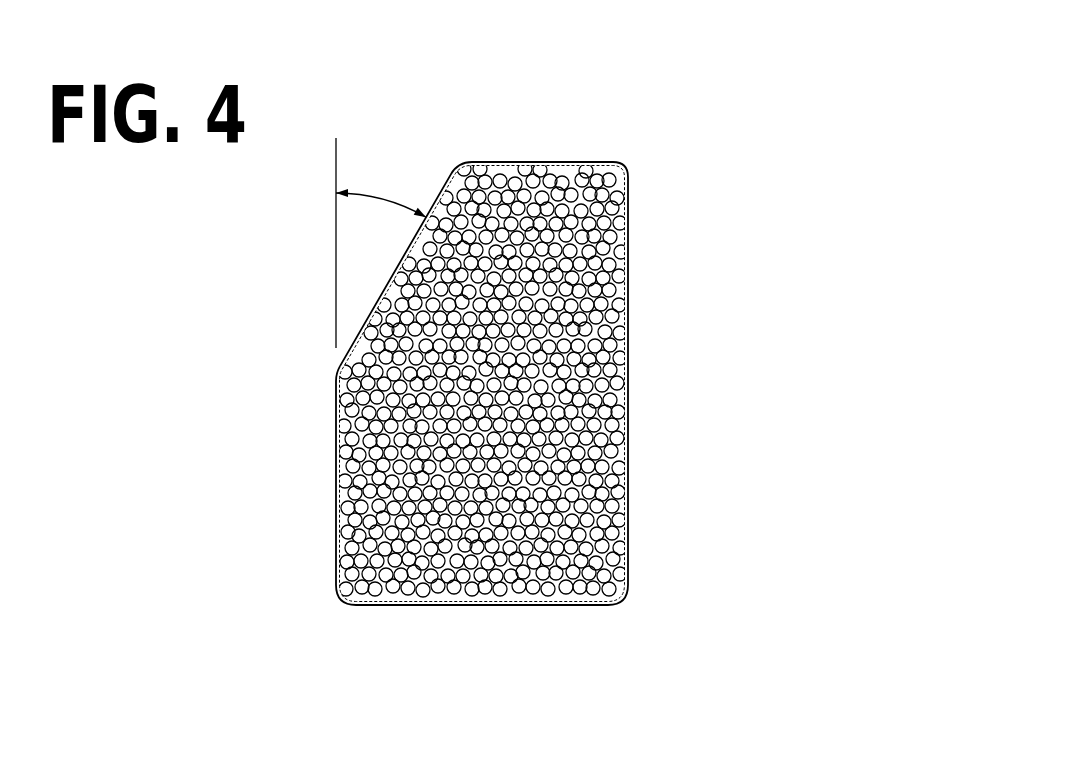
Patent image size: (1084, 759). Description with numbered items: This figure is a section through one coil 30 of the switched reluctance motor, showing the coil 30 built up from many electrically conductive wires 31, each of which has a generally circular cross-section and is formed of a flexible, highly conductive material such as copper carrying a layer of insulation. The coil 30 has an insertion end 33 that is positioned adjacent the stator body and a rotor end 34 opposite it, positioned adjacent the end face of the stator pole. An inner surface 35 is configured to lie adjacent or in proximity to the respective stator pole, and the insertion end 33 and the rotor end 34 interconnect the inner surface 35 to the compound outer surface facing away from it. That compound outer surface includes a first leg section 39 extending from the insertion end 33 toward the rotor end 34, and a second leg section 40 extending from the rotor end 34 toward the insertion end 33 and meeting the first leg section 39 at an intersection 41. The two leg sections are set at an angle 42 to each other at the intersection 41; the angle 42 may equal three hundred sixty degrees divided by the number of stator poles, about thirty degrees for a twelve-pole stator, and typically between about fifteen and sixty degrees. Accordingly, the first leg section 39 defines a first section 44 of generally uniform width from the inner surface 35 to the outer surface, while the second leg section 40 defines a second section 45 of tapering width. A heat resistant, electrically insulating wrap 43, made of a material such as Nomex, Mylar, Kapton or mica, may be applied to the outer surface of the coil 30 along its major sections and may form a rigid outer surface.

The coil 30 is at (665, 76).
The electrically conductive wire 31 is at (644, 397).
The insertion end 33 is at (497, 606).
The rotor end 34 is at (513, 162).
The inner surface 35 is at (627, 312).
The first leg section 39 is at (336, 497).
The second leg section 40 is at (438, 194).
The intersection 41 is at (338, 372).
The angle 42 is at (380, 199).
The insulating wrap 43 is at (628, 183).
The first section 44 is at (662, 571).
The second section 45 is at (669, 247).